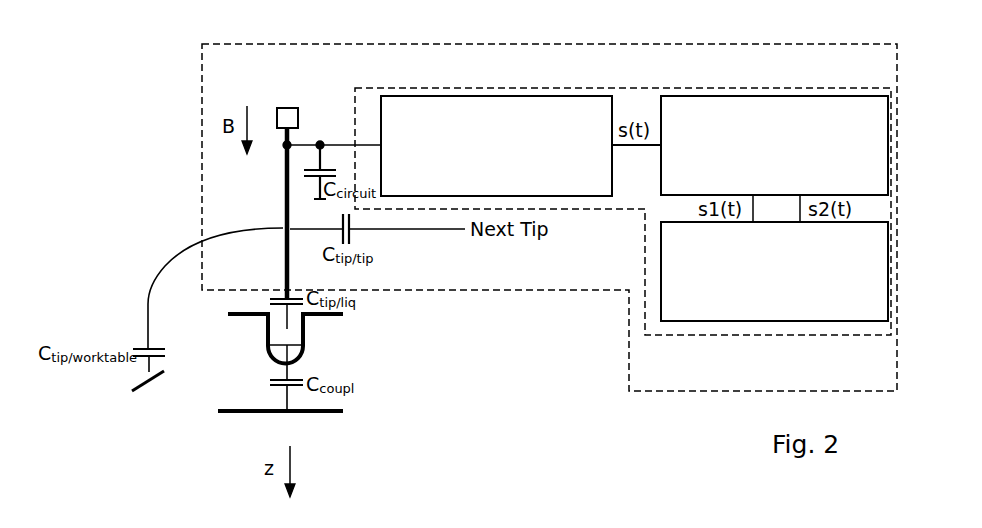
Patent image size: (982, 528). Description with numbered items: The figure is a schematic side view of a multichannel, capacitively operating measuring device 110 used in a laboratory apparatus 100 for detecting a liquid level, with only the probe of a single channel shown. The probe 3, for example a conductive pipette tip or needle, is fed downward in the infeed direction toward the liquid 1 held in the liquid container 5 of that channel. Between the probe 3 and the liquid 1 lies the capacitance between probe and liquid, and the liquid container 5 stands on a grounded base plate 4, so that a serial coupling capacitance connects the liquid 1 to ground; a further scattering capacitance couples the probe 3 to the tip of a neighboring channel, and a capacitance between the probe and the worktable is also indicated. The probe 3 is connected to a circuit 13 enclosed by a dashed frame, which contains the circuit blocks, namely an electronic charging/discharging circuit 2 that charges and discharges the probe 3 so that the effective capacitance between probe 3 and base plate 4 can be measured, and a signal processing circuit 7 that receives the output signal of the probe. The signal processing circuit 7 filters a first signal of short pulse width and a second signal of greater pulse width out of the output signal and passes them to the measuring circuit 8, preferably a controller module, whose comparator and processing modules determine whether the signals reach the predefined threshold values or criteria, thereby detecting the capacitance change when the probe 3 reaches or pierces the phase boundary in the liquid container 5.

The measuring device 110 is at (200, 44).
The laboratory apparatus 100 is at (111, 124).
The circuit 13 is at (825, 336).
The electronic charging/discharging circuit 2 is at (508, 100).
The signal processing circuit 7 is at (733, 96).
The measuring circuit 8 is at (746, 313).
The probe 3 is at (283, 167).
The liquid container 5 is at (265, 329).
The liquid 1 is at (289, 349).
The base plate 4 is at (218, 412).